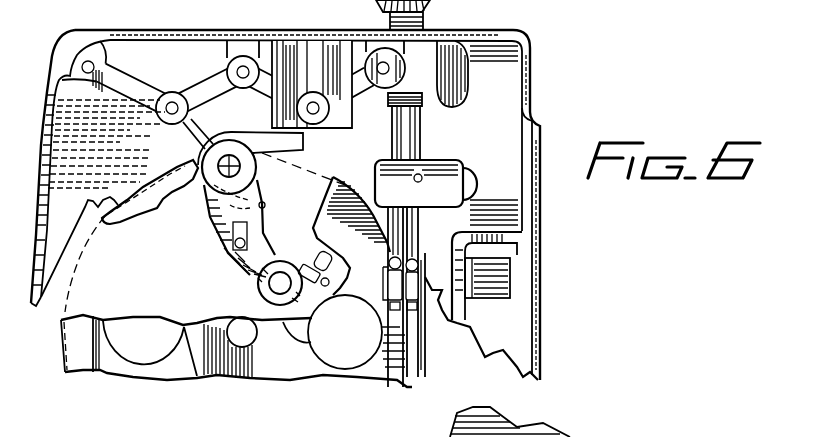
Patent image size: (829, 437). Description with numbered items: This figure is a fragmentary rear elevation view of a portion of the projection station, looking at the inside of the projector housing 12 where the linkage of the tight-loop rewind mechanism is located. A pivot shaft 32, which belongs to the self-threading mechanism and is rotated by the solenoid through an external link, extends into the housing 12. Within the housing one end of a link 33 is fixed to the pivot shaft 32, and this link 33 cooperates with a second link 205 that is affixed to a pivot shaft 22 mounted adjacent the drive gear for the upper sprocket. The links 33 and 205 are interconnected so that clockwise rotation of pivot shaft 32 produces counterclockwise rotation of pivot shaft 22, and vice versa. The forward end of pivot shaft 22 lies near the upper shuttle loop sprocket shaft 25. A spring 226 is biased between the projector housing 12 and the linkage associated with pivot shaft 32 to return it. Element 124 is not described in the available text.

The projector housing 12 is at (545, 33).
The pivot shaft 22 is at (277, 283).
The upper shuttle loop sprocket shaft 25 is at (223, 380).
The pivot shaft 32 is at (260, 153).
The link 33 is at (260, 200).
The cam 124 is at (176, 168).
The link 205 is at (243, 267).
The spring 226 is at (253, 133).